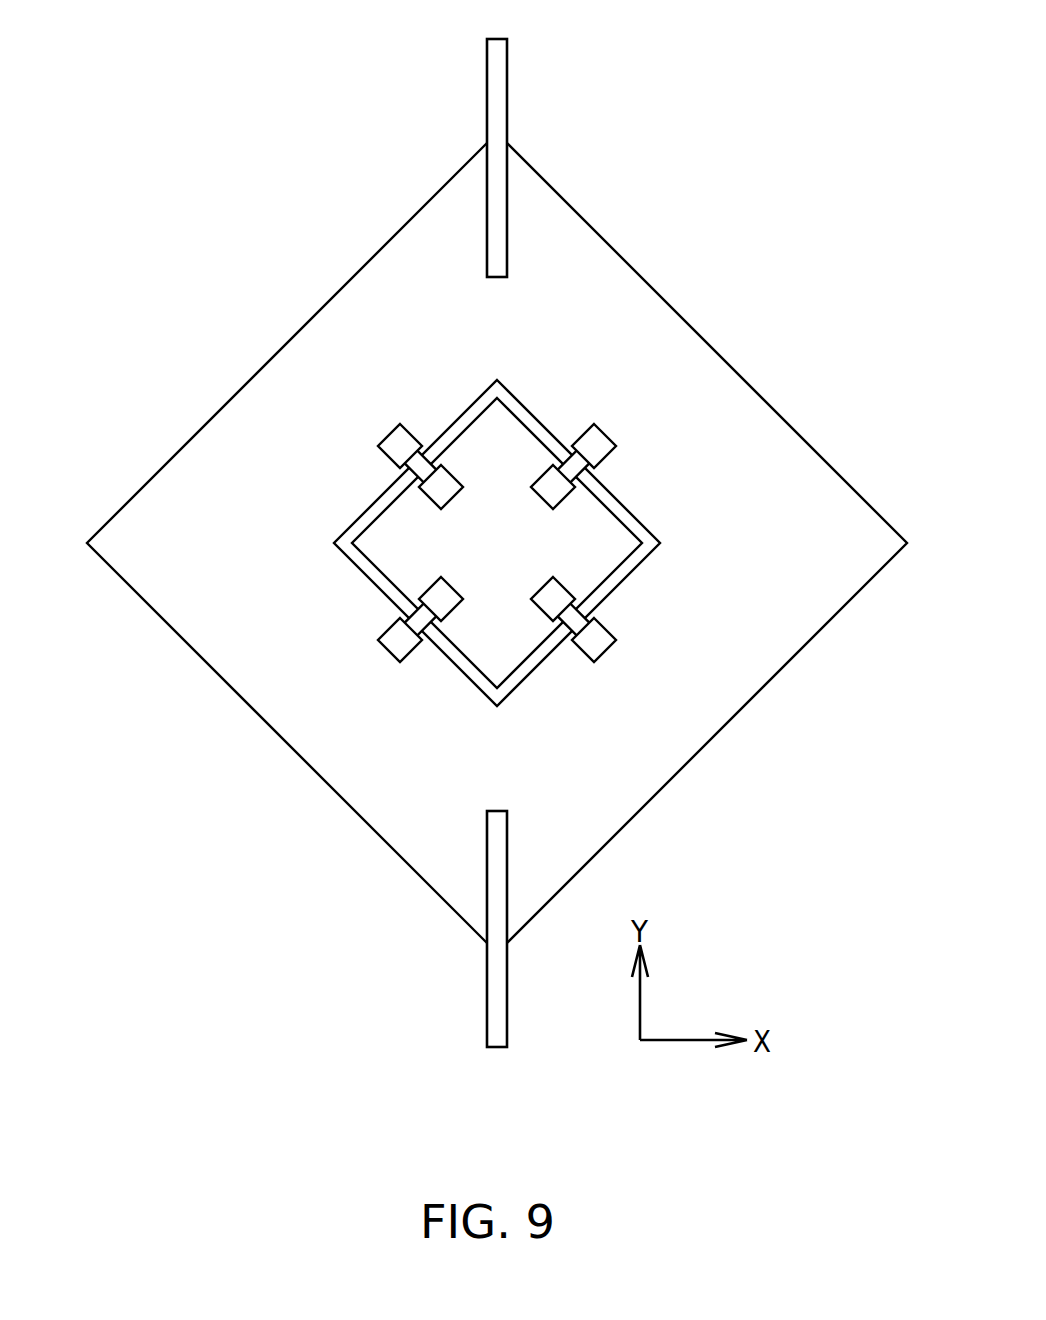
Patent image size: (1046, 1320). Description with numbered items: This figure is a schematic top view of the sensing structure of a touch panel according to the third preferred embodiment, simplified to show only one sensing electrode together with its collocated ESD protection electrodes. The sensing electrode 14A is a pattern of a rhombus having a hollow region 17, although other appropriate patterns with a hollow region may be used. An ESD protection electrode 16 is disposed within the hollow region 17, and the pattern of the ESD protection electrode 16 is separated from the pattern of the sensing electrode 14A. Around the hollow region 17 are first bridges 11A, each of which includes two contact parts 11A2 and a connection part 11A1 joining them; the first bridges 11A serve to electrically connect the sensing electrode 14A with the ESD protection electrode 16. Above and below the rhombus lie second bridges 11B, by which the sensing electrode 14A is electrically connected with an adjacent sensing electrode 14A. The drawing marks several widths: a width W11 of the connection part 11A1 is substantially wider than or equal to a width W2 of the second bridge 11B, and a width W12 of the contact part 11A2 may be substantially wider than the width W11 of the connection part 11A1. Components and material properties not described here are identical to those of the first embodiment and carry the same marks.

The first bridge 11A is at (410, 422).
The connection part 11A1 is at (425, 468).
The contact part 11A2 is at (398, 427).
The second bridge 11B is at (502, 53).
The sensing electrode 14A is at (517, 323).
The ESD protection electrode 16 is at (508, 561).
The hollow region 17 is at (670, 531).
The width of the second bridge W2 is at (437, 109).
The width of the connection part W11 is at (590, 493).
The width of the contact part W12 is at (641, 450).